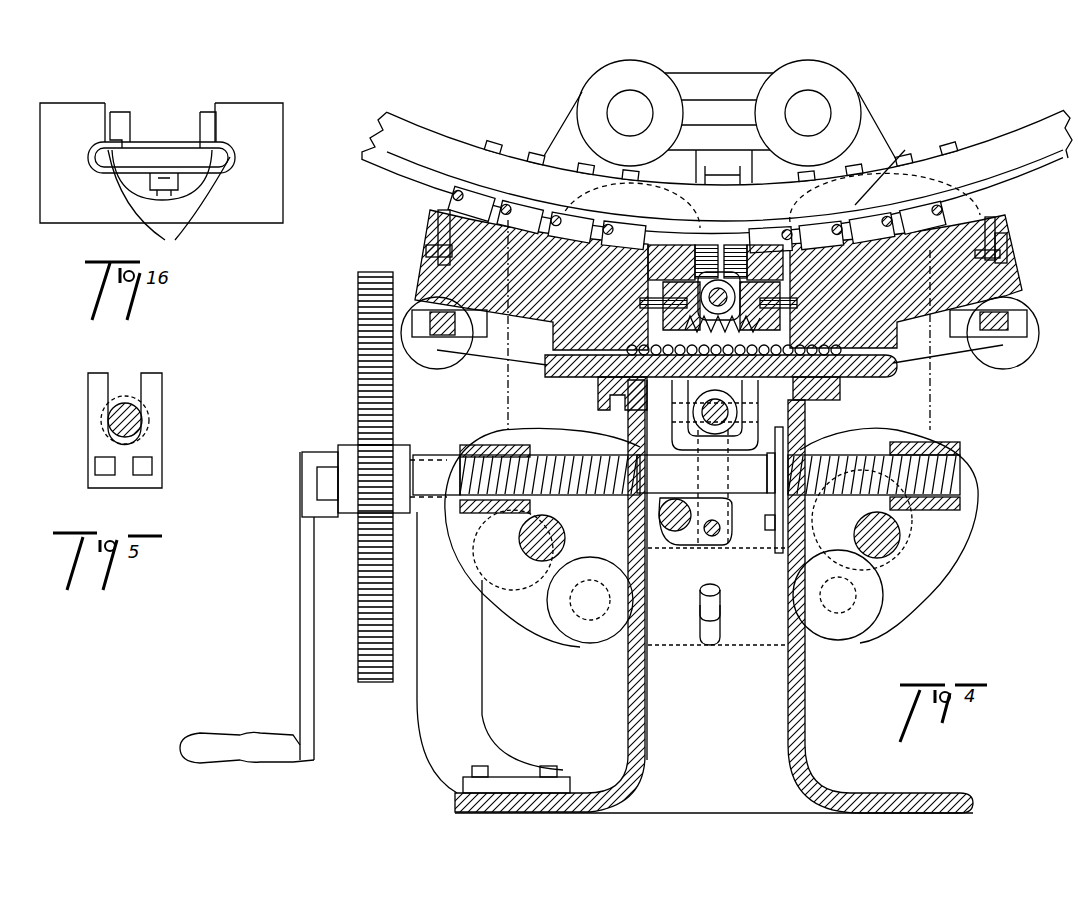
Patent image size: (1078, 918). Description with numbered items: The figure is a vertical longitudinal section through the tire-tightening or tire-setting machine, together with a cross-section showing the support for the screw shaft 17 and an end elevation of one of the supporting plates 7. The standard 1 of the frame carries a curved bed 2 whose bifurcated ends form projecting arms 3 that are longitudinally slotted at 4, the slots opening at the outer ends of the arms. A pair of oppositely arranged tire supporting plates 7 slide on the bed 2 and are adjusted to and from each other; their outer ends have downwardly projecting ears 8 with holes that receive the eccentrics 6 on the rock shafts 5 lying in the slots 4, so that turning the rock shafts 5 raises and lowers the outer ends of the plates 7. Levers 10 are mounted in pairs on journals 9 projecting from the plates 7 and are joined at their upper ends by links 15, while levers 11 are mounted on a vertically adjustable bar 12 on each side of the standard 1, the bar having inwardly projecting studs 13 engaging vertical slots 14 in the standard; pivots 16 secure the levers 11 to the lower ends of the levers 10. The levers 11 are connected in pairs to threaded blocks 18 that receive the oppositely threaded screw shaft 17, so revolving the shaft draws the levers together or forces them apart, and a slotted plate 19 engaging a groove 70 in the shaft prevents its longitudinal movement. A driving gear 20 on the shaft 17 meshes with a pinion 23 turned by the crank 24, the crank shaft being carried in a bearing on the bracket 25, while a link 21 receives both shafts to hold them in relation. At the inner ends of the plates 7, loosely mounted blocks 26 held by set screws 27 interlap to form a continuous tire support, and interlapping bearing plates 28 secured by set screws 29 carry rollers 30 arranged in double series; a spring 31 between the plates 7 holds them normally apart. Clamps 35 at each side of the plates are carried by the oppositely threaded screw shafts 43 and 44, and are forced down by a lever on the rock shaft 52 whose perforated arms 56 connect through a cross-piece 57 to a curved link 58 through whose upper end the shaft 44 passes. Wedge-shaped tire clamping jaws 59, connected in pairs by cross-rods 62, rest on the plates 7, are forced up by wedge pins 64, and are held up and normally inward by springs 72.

In FIG. 5, the standard 1 is at (163, 456).
In FIG. 4, the standard 1 is at (775, 685).
In FIG. 4, the curved bed 2 is at (870, 370).
In FIG. 4, the projecting arms 3 is at (950, 350).
In FIG. 4, the slots 4 is at (470, 318).
In FIG. 4, the rock shafts 5 is at (430, 318).
In FIG. 4, the eccentrics 6 is at (445, 355).
In FIG. 16, the tire supporting plates 7 is at (268, 186).
In FIG. 4, the tire supporting plates 7 is at (436, 236).
In FIG. 4, the ears 8 is at (1022, 372).
In FIG. 4, the journals 9 is at (885, 166).
In FIG. 4, the levers 10 is at (514, 398).
In FIG. 4, the levers 11 is at (530, 605).
In FIG. 4, the vertically adjustable bar 12 is at (517, 134).
In FIG. 4, the studs 13 is at (712, 645).
In FIG. 4, the vertical slots 14 is at (720, 605).
In FIG. 4, the links 15 is at (740, 73).
In FIG. 4, the pivots or studs 16 is at (525, 545).
In FIG. 5, the screw shaft 17 is at (140, 420).
In FIG. 4, the screw shaft 17 is at (750, 500).
In FIG. 4, the threaded nuts or blocks 18 is at (478, 445).
In FIG. 5, the slotted plate 19 is at (160, 400).
In FIG. 4, the slotted plate 19 is at (790, 450).
In FIG. 4, the driving gear 20 is at (358, 388).
In FIG. 4, the link 21 is at (352, 512).
In FIG. 4, the pinion 23 is at (650, 240).
In FIG. 4, the crank 24 is at (300, 604).
In FIG. 4, the bracket or standard 25 is at (422, 704).
In FIG. 4, the blocks 26 is at (718, 280).
In FIG. 4, the set screws 27 is at (760, 244).
In FIG. 4, the bearing plates 28 is at (795, 300).
In FIG. 4, the set screws 29 is at (790, 300).
In FIG. 4, the rollers 30 is at (835, 385).
In FIG. 4, the spring 31 is at (600, 380).
In FIG. 4, the clamps 35 is at (726, 184).
In FIG. 4, the screw shaft 43 is at (700, 250).
In FIG. 4, the screw shaft 44 is at (715, 412).
In FIG. 4, the rock shaft 52 is at (672, 535).
In FIG. 4, the arms 56 is at (700, 548).
In FIG. 4, the cross-piece 57 is at (720, 536).
In FIG. 4, the link 58 is at (758, 532).
In FIG. 16, the tire clamping jaws 59 is at (120, 112).
In FIG. 4, the tire clamping jaws 59 is at (500, 214).
In FIG. 16, the cross-rods 62 is at (175, 134).
In FIG. 4, the cross-rods 62 is at (600, 228).
In FIG. 4, the wedge pins 64 is at (948, 146).
In FIG. 4, the groove 70 is at (790, 458).
In FIG. 16, the springs 72 is at (169, 202).
In FIG. 4, the springs 72 is at (428, 228).